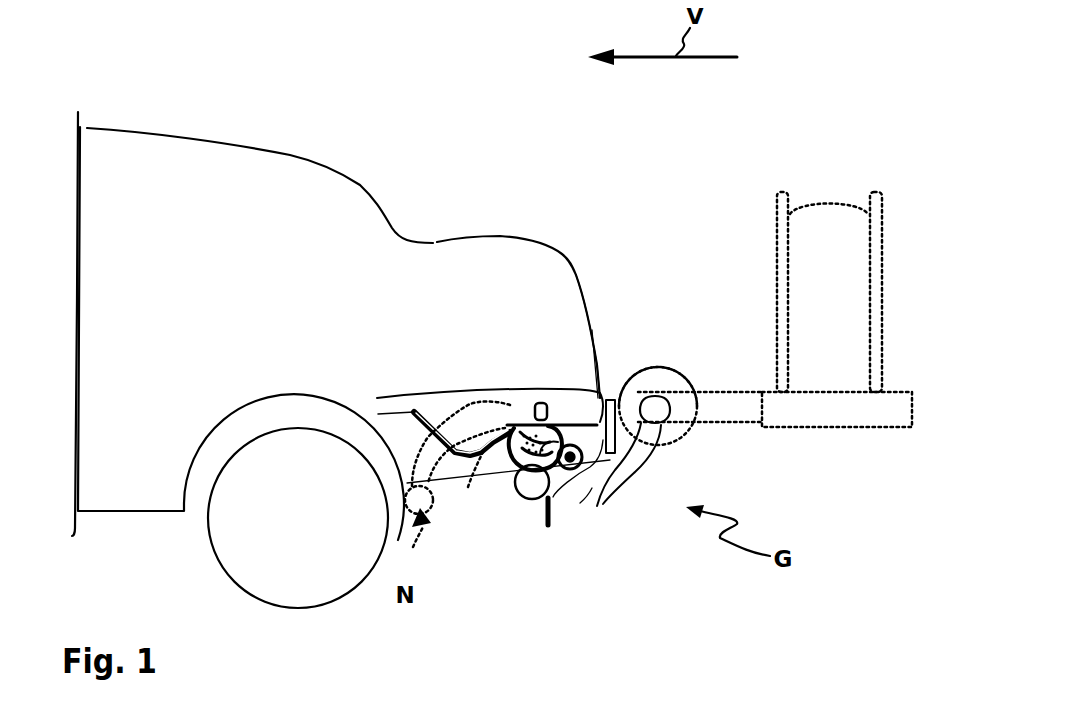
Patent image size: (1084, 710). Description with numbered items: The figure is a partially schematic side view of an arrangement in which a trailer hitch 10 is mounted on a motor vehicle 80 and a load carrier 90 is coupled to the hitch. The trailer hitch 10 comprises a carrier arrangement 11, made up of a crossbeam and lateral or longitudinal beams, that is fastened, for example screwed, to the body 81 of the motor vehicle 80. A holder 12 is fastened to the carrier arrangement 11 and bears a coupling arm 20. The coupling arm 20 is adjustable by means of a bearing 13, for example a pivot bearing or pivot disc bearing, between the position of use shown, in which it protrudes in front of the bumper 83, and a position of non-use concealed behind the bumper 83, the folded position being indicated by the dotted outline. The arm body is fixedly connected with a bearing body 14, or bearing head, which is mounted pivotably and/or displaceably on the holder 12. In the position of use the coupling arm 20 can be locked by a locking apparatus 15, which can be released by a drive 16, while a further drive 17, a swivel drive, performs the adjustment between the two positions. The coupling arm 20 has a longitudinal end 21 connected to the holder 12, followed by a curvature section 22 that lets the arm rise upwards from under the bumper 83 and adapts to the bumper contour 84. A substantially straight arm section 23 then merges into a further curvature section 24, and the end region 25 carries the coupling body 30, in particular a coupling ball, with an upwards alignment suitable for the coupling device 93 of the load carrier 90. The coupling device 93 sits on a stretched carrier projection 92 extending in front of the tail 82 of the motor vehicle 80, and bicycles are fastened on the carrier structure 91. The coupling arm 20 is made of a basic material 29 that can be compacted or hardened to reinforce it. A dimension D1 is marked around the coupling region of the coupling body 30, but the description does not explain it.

The trailer hitch 10 is at (632, 500).
The carrier arrangement 11 is at (410, 395).
The holder 12 is at (594, 398).
The bearing 13 is at (512, 400).
The bearing body 14 is at (556, 400).
The locking apparatus 15 is at (522, 402).
The drive 16 is at (457, 458).
The drive 17 is at (540, 402).
The coupling arm 20 is at (700, 504).
The longitudinal end 21 is at (548, 514).
The curvature section 22 is at (583, 498).
The arm section 23 is at (638, 472).
The curvature section 24 is at (663, 446).
The end region 25 is at (664, 432).
The basic material 29 is at (663, 455).
The coupling body 30 is at (664, 408).
The motor vehicle 80 is at (336, 343).
The body 81 is at (225, 127).
The tail 82 is at (574, 267).
The bumper 83 is at (611, 398).
The bumper contour 84 is at (605, 462).
The load carrier 90 is at (792, 332).
The carrier structure 91 is at (845, 407).
The carrier projection 92 is at (748, 400).
The coupling device 93 is at (668, 370).
The ball socket diameter D1 is at (651, 392).